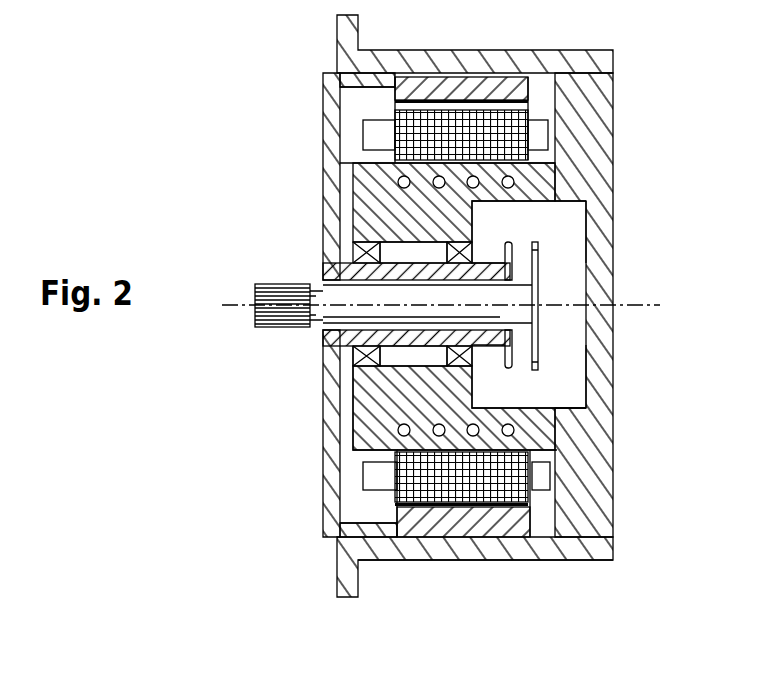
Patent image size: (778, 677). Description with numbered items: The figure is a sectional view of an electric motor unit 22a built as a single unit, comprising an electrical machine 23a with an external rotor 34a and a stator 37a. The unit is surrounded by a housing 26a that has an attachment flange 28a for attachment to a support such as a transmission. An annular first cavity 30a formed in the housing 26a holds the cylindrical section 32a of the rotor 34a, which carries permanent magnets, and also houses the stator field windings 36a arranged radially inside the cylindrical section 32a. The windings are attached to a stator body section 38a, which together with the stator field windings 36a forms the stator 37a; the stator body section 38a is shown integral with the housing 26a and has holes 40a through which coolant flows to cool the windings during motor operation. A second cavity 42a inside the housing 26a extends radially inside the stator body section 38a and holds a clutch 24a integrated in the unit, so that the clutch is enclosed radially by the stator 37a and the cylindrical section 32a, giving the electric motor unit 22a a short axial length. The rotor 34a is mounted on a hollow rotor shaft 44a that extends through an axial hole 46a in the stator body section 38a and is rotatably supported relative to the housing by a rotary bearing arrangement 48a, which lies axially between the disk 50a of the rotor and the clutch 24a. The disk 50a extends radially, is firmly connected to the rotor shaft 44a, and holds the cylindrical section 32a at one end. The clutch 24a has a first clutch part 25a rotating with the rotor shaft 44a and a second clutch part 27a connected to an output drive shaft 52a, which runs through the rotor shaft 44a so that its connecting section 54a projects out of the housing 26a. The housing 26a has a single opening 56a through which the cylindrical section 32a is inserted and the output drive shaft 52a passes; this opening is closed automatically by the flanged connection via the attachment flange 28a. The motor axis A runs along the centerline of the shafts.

The electric motor unit 22a is at (497, 583).
The electrical machine 23a is at (539, 520).
The clutch 24a is at (547, 224).
The first clutch part 25a is at (588, 410).
The housing 26a is at (583, 510).
The second clutch part 27a is at (513, 365).
The attachment flange 28a is at (345, 36).
The first cavity 30a is at (543, 85).
The cylindrical section 32a is at (460, 90).
The rotor 34a is at (334, 108).
The stator field windings 36a is at (510, 143).
The stator 37a is at (400, 198).
The stator body section 38a is at (347, 193).
The holes 40a is at (527, 182).
The second cavity 42a is at (567, 353).
The rotor shaft 44a is at (343, 336).
The axial hole 46a is at (529, 232).
The rotary bearing arrangement 48a is at (352, 252).
The disk 50a is at (332, 480).
The output drive shaft 52a is at (515, 295).
The connecting section 54a is at (273, 317).
The opening 56a is at (340, 537).
The motor axis A is at (242, 304).